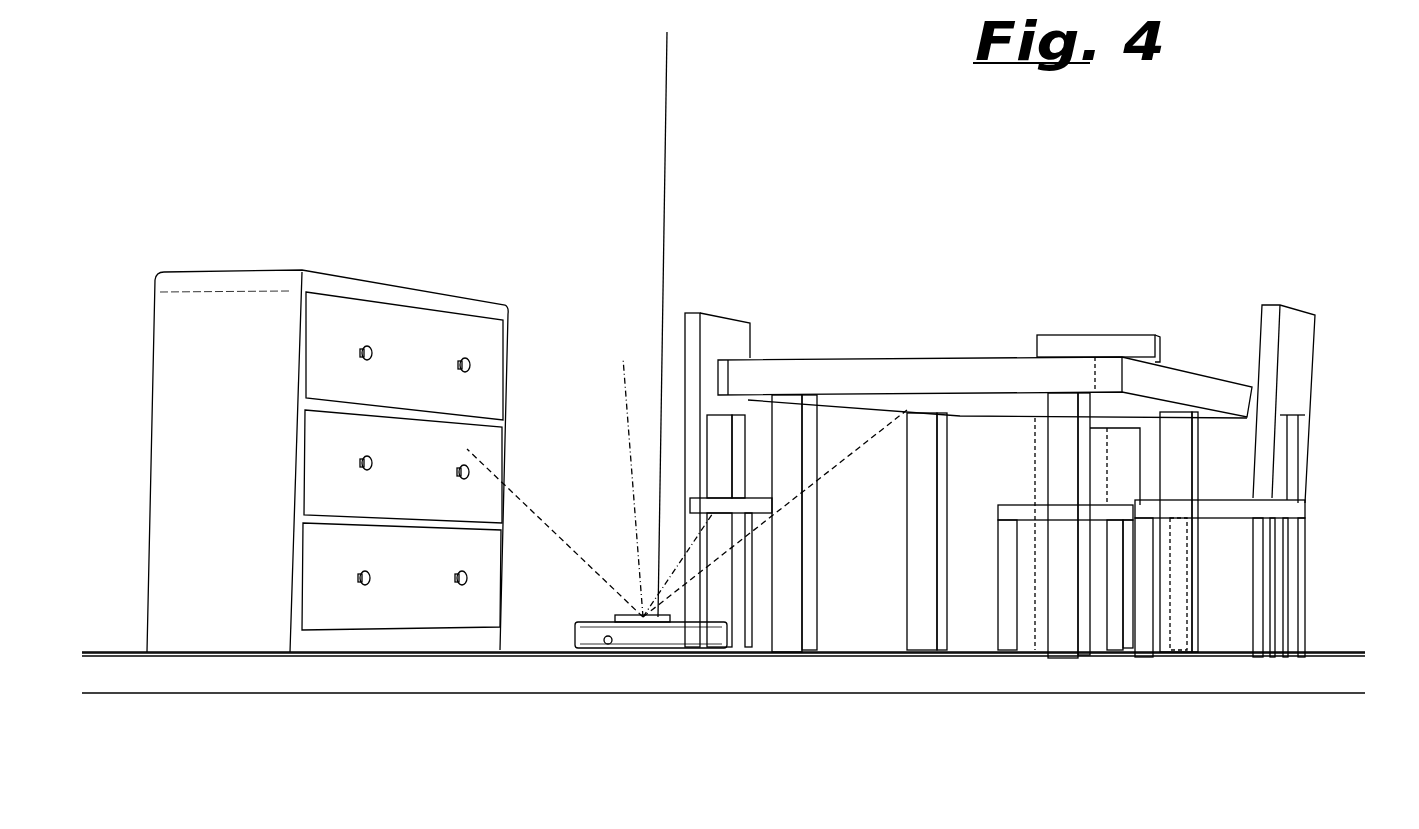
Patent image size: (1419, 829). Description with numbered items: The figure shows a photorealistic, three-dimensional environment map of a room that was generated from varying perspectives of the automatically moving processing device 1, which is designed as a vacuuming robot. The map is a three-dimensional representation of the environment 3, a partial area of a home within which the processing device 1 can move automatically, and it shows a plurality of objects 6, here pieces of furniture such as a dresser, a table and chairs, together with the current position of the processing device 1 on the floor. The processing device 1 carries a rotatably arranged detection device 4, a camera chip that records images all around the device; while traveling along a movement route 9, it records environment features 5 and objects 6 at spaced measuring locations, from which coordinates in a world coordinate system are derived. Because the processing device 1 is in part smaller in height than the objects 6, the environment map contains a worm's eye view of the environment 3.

The processing device 1 is at (687, 648).
The environment 3 is at (585, 152).
The detection device 4 is at (632, 630).
The environment features 5 is at (665, 230).
The objects 6 is at (415, 290).
The movement route 9 is at (542, 650).